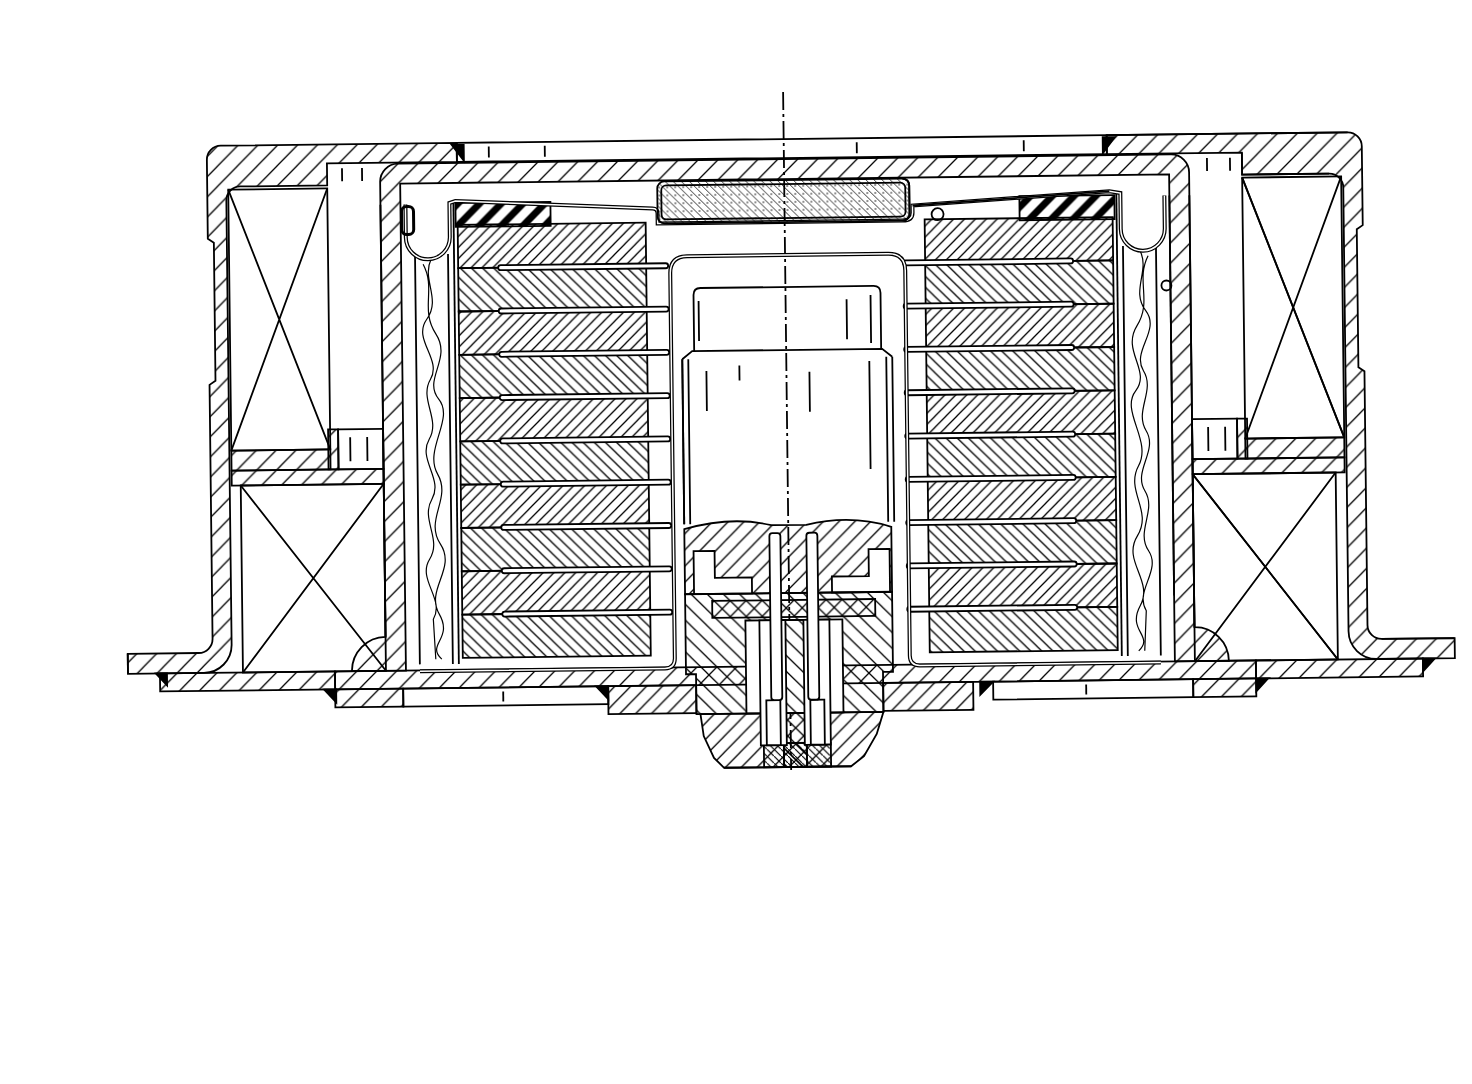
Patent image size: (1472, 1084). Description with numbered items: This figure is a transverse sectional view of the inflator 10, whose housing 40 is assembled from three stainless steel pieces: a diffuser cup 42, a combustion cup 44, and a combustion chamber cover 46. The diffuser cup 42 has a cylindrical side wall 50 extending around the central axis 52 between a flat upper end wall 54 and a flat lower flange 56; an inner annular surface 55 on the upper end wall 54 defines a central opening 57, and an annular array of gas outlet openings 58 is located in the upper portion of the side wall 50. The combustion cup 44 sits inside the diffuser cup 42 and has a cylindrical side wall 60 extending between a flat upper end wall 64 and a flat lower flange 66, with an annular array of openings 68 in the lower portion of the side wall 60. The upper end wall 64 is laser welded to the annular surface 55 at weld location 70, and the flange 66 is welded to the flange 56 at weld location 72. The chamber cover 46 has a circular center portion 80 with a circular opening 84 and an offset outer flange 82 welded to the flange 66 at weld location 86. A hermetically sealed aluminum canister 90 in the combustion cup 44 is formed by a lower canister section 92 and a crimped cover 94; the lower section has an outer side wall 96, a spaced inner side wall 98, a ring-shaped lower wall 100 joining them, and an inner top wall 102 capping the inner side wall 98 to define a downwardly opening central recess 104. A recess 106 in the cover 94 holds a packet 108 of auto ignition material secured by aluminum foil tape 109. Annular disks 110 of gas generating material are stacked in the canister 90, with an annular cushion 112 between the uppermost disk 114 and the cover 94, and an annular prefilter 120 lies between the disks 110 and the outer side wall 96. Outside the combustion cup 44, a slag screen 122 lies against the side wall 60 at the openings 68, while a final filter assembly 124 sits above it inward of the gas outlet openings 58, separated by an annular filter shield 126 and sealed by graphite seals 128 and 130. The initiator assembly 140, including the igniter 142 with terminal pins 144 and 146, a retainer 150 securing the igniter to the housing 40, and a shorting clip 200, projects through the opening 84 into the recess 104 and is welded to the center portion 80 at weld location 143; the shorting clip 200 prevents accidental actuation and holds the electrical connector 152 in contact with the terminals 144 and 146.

The inflator 10 is at (342, 107).
The housing 40 is at (206, 486).
The diffuser cup 42 is at (135, 671).
The combustion cup 44 is at (246, 686).
The combustion chamber cover 46 is at (367, 705).
The side wall 50 is at (1360, 426).
The central axis 52 is at (783, 108).
The upper end wall 54 is at (1236, 152).
The inner annular surface 55 is at (461, 141).
The lower flange 56 is at (1405, 650).
The central opening 57 is at (603, 140).
The gas outlet openings 58 is at (220, 303).
The side wall 60 is at (1186, 318).
The upper end wall 64 is at (1054, 160).
The lower flange 66 is at (1317, 678).
The openings 68 is at (398, 599).
The weld location 70 is at (1114, 150).
The weld location 72 is at (1425, 676).
The center portion 80 is at (1094, 678).
The outer flange 82 is at (1214, 696).
The circular opening 84 is at (862, 748).
The weld location 86 is at (1252, 691).
The canister 90 is at (1003, 192).
The lower canister section 92 is at (900, 455).
The canister cover 94 is at (982, 198).
The outer side wall 96 is at (1186, 288).
The inner side wall 98 is at (903, 338).
The lower wall 100 is at (1037, 675).
The inner top wall 102 is at (740, 266).
The central recess 104 is at (767, 277).
The recess 106 is at (866, 196).
The packet of auto ignition material 108 is at (733, 186).
The aluminum foil tape 109 is at (940, 208).
The annular disks of gas generating material 110 is at (968, 642).
The annular cushion 112 is at (1098, 212).
The uppermost gas generating disk 114 is at (528, 248).
The prefilter 120 is at (1139, 356).
The slag screen 122 is at (1257, 559).
The final filter assembly 124 is at (1306, 214).
The filter shield 126 is at (1247, 482).
The graphite seal 128 is at (1291, 173).
The graphite seal 130 is at (1335, 462).
The initiator assembly 140 is at (590, 694).
The igniter 142 is at (812, 282).
The weld location 143 is at (982, 694).
The terminal pin 144 is at (768, 545).
The terminal pin 146 is at (807, 541).
The retainer 150 is at (640, 715).
The electrical connector 152 is at (736, 768).
The shorting clip 200 is at (731, 699).